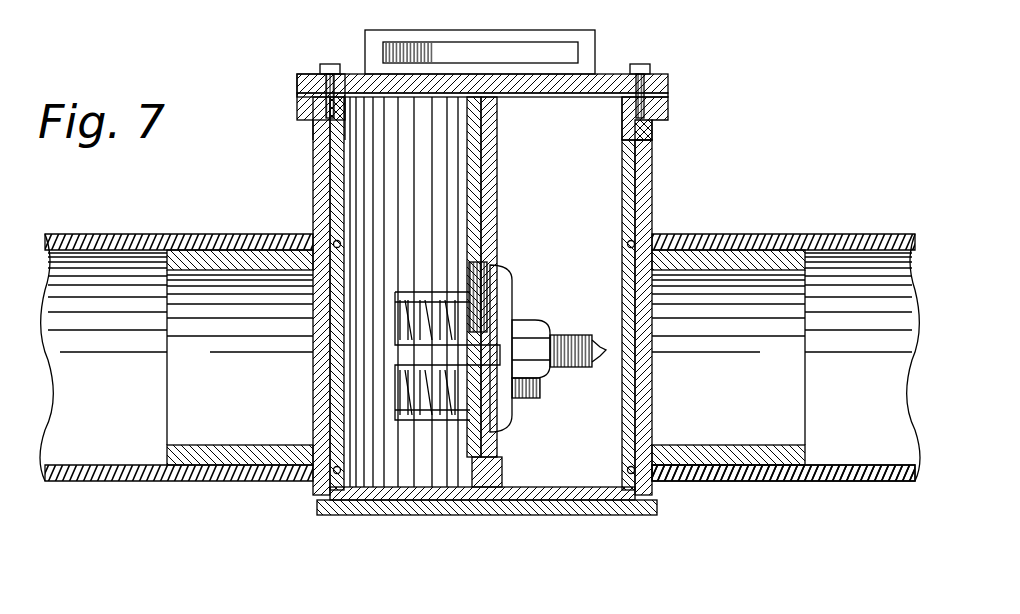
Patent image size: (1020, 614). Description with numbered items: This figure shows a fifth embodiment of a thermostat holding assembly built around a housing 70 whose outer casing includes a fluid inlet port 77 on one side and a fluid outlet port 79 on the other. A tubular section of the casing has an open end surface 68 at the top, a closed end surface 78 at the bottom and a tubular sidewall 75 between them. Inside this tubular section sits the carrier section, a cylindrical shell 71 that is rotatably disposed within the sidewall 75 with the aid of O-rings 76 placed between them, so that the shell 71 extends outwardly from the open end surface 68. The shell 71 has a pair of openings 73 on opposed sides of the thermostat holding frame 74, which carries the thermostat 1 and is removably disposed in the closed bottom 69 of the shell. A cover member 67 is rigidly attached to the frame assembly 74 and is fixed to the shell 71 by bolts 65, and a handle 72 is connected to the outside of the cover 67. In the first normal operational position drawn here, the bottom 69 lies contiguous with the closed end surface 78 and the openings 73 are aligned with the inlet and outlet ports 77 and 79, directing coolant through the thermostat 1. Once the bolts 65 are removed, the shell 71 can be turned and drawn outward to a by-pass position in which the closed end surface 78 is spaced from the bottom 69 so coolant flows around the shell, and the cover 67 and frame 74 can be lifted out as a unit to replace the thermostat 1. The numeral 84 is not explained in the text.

The thermostat 1 is at (540, 300).
The bolts 65 is at (652, 66).
The cover member 67 is at (362, 85).
The open end surface 68 is at (665, 112).
The closed bottom 69 is at (458, 500).
The housing 70 is at (662, 222).
The cylindrical shell 71 is at (800, 234).
The handle 72 is at (566, 32).
The openings 73 is at (337, 318).
The thermostat holding frame 74 is at (465, 214).
The tubular sidewall 75 is at (316, 226).
The O-rings 76 is at (338, 242).
The fluid inlet port 77 is at (225, 481).
The closed end surface 78 is at (575, 515).
The fluid outlet port 79 is at (772, 480).
The support 84 is at (248, 612).